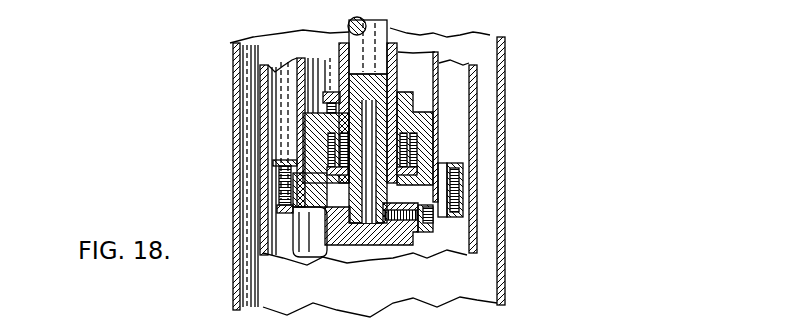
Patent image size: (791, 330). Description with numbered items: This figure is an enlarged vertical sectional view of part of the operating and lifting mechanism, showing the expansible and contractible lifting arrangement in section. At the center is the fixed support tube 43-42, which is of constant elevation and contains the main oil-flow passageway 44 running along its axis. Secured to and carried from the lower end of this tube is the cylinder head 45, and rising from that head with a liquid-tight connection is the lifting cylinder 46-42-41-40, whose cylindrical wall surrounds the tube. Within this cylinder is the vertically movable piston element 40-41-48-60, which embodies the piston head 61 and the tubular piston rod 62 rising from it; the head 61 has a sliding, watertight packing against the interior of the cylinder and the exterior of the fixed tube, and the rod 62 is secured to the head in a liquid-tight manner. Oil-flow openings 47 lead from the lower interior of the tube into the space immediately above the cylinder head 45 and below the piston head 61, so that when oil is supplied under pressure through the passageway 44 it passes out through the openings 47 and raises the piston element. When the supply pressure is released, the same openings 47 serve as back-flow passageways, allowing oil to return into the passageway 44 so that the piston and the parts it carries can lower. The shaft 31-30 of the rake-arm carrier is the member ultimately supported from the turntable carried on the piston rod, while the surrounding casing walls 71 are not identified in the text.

The main oil-flow passageway 44 is at (352, 20).
The center circular support tube of the fixed member 43-42 is at (383, 30).
The outer casing wall 71 is at (233, 83).
The shaft of the rake-arm carrier 31-30 is at (470, 120).
The lifting cylinder of the fixed member of the expansible element of the lifting me 46-42-41-40 is at (470, 153).
The cylinder head 45 is at (470, 230).
The vertically movable piston element of the expansible element of the lifting means 40-41-48-60 is at (173, 177).
The tubular piston rod 62 is at (342, 70).
The piston head 61 is at (318, 138).
The oil-flow openings 47 is at (327, 258).